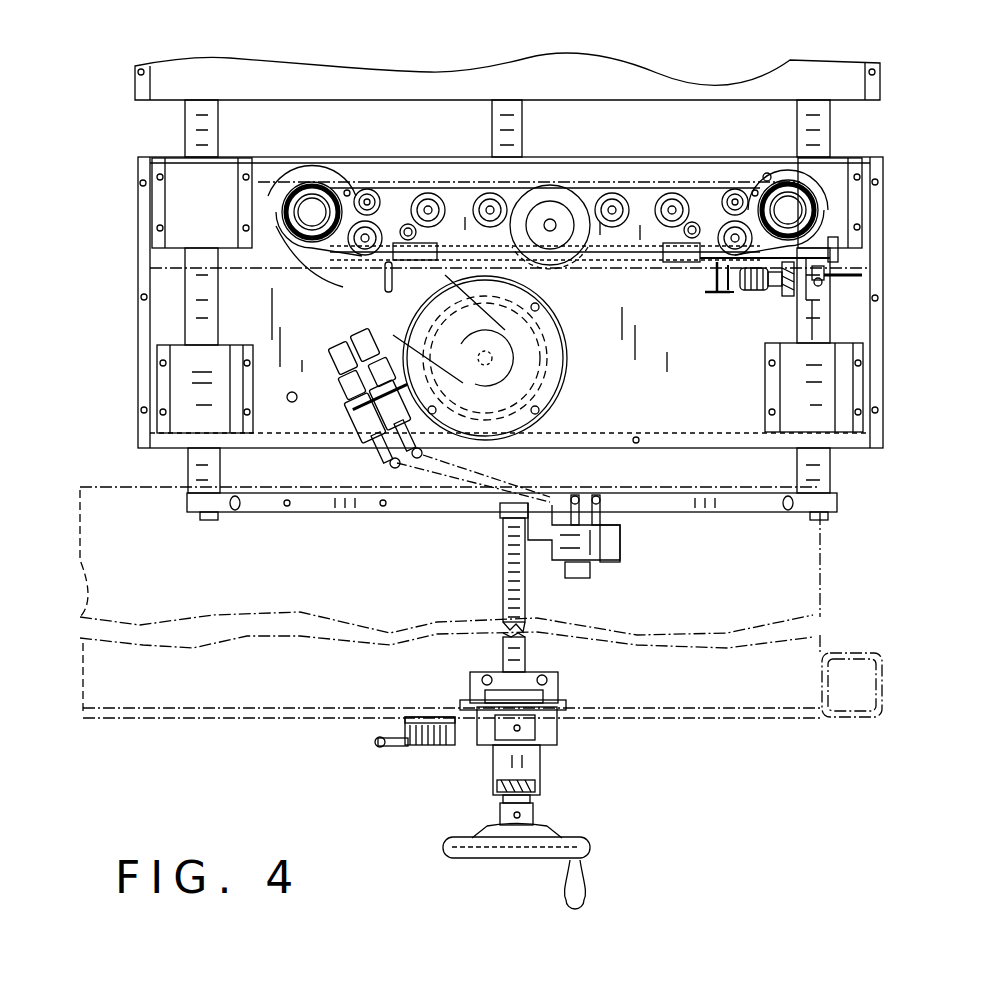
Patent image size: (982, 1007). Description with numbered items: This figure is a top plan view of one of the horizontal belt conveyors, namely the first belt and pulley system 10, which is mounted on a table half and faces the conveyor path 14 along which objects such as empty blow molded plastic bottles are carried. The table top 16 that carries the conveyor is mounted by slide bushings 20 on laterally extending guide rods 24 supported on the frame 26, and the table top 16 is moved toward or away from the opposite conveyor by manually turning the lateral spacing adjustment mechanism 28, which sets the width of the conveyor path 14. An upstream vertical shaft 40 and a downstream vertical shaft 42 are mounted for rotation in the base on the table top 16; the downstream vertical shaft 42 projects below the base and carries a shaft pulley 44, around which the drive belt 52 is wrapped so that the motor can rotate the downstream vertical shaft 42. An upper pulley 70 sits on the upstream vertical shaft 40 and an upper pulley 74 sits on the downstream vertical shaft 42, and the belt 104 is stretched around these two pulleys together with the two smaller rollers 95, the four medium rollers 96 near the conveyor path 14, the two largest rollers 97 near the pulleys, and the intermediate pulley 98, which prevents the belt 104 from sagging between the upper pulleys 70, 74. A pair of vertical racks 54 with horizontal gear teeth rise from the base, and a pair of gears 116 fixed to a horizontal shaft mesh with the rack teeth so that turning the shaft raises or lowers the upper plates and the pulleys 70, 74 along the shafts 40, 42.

The first belt and pulley system 10 is at (612, 377).
The conveyor path 14 is at (892, 51).
The table top 16 is at (250, 300).
The slide bushings 20 is at (185, 204).
The guide rods 24 is at (183, 313).
The frame 26 is at (790, 688).
The lateral spacing adjustment mechanism 28 is at (590, 809).
The upstream vertical shaft 40 is at (766, 173).
The downstream vertical shaft 42 is at (297, 180).
The shaft pulley 44 is at (312, 175).
The drive belt 52 is at (348, 323).
The vertical racks 54 is at (390, 225).
The upper pulley 70 is at (787, 181).
The upper pulley 74 is at (318, 190).
The smaller rollers 95 is at (367, 189).
The medium rollers 96 is at (488, 193).
The largest rollers 97 is at (365, 256).
The intermediate pulley 98 is at (538, 186).
The belt 104 is at (590, 186).
The gears 116 is at (418, 257).